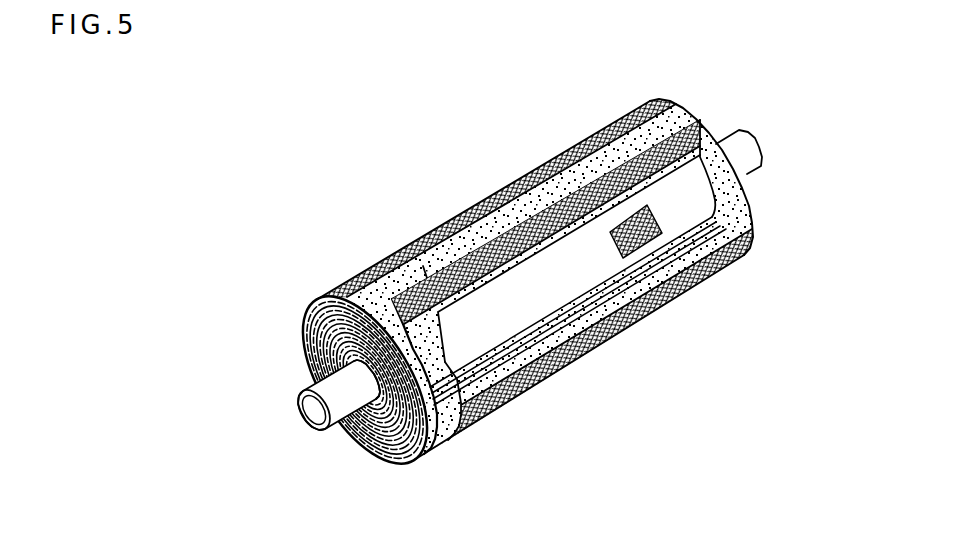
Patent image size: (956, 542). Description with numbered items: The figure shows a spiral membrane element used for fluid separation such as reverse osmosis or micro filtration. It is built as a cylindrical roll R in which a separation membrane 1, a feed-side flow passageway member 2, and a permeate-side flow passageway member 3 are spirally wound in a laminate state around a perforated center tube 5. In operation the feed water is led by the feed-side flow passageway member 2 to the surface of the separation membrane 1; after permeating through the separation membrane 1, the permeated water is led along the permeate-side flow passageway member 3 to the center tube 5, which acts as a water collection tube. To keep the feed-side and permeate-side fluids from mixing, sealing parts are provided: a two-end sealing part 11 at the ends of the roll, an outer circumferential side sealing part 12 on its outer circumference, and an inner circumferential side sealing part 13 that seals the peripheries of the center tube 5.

The cylindrical roll R is at (330, 290).
The separation membrane 1 is at (449, 224).
The feed-side flow passageway member 2 is at (410, 251).
The permeate-side flow passageway member 3 is at (660, 250).
The perforated center tube 5 is at (337, 407).
The two-end sealing part 11 is at (462, 418).
The outer circumferential side sealing part 12 is at (538, 178).
The inner circumferential side sealing part 13 is at (343, 357).